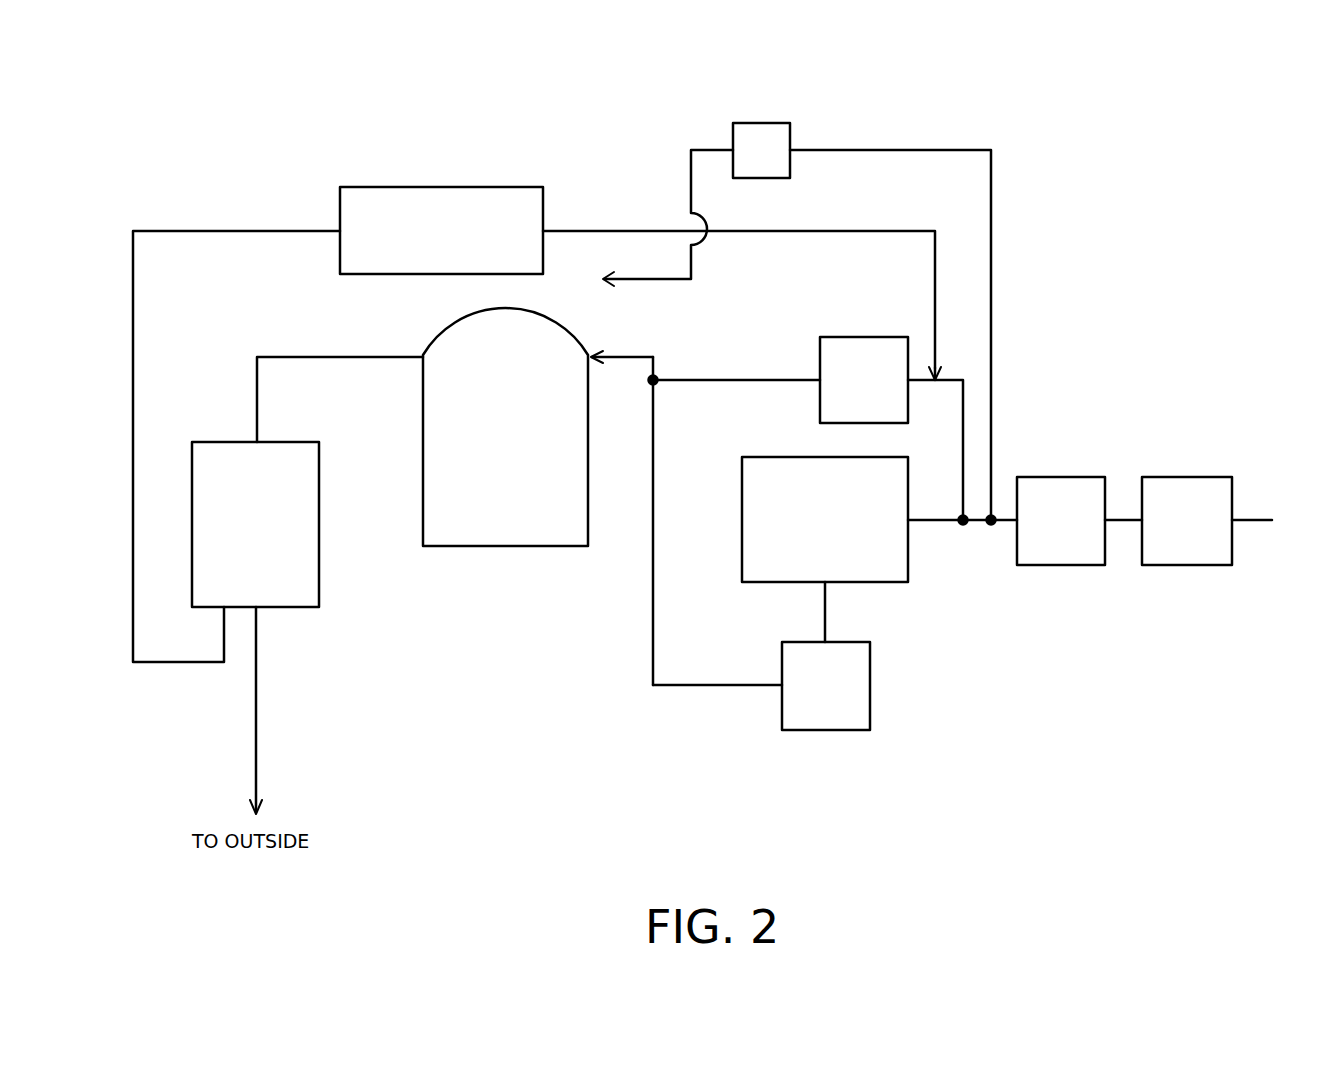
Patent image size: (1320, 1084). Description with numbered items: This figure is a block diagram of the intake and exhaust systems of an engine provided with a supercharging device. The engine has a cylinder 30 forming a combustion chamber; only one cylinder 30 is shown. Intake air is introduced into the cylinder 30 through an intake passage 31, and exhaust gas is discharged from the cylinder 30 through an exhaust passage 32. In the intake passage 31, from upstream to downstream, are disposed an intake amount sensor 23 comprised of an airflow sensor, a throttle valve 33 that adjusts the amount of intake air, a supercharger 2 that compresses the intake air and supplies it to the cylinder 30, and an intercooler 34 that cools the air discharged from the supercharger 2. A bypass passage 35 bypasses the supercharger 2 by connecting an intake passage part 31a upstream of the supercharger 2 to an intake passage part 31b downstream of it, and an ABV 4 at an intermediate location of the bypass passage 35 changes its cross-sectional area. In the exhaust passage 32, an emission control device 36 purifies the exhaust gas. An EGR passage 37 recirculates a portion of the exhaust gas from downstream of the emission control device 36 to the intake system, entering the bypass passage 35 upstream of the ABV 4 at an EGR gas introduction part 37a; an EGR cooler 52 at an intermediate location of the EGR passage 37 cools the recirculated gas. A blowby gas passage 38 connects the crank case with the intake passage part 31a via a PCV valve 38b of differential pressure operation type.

The supercharger 2 is at (741, 480).
The ABV 4 is at (857, 336).
The intake amount sensor 23 is at (1187, 567).
The cylinder 30 is at (500, 548).
The intake passage 31 is at (676, 692).
The intake passage part 31a is at (940, 523).
The intake passage part 31b is at (651, 578).
The exhaust passage 32 is at (282, 355).
The throttle valve 33 is at (1062, 476).
The intercooler 34 is at (872, 685).
The bypass passage 35 is at (740, 378).
The emission control device 36 is at (320, 527).
The EGR passage 37 is at (645, 229).
The EGR gas introduction part 37a is at (940, 377).
The blowby gas passage 38 is at (993, 210).
The PCV valve 38b is at (770, 122).
The EGR cooler 52 is at (445, 186).